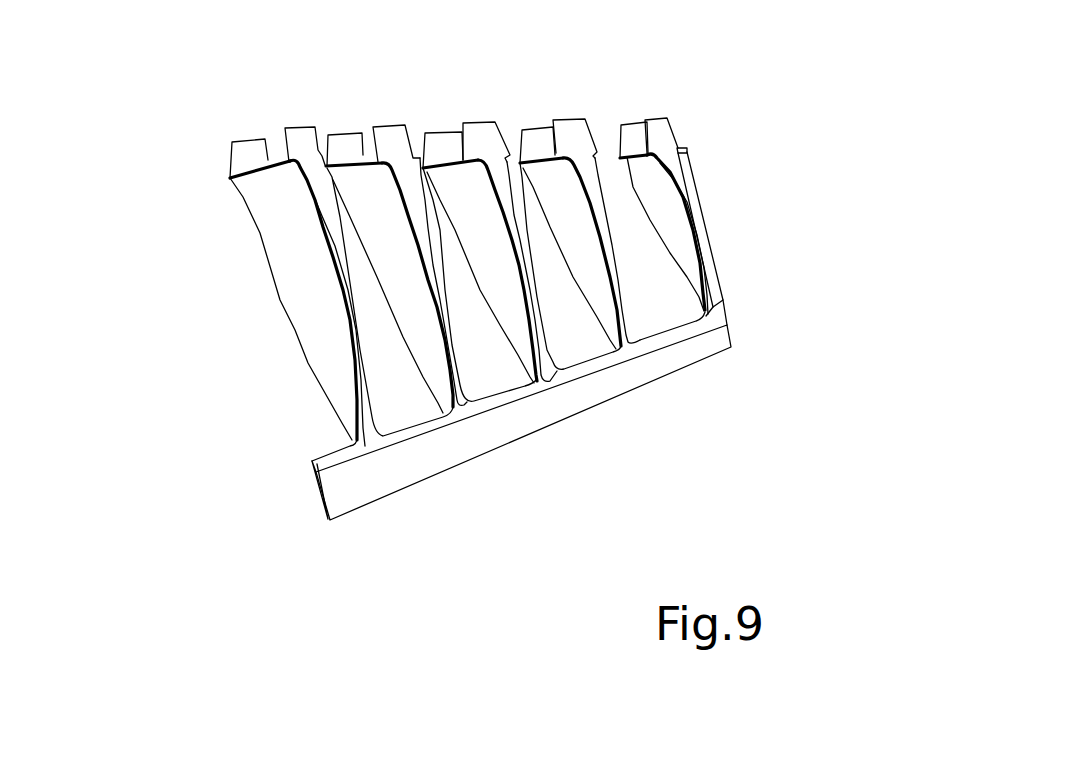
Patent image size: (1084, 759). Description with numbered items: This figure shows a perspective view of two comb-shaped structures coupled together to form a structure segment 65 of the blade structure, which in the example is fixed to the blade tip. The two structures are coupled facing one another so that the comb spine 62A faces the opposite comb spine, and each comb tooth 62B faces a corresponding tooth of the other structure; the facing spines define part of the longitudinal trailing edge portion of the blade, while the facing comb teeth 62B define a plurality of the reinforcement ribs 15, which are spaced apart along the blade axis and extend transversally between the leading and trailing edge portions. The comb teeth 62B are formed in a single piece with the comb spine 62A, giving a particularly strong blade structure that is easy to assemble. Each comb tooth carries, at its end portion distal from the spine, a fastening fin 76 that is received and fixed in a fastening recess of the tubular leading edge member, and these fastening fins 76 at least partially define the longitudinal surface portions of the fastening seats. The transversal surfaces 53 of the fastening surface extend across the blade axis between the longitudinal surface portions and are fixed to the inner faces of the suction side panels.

The structure segment 65 is at (218, 301).
The comb spine 62A is at (443, 457).
The comb teeth 62B is at (423, 207).
The reinforcement ribs 15 is at (594, 140).
The fastening fins 76 is at (250, 141).
The transversal surfaces 53 is at (352, 337).